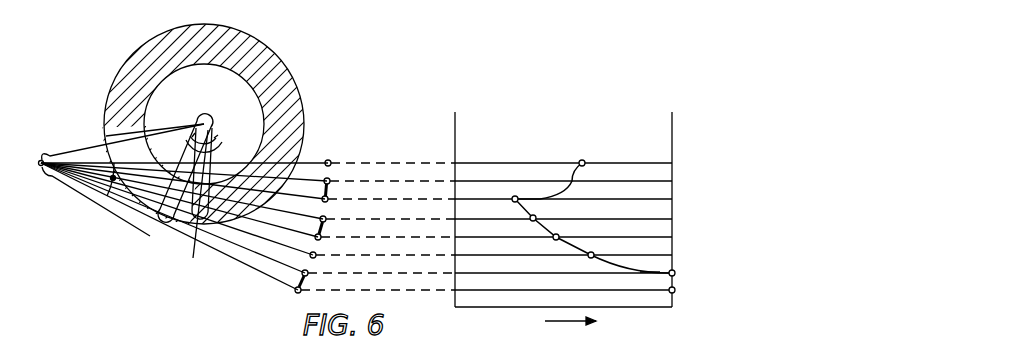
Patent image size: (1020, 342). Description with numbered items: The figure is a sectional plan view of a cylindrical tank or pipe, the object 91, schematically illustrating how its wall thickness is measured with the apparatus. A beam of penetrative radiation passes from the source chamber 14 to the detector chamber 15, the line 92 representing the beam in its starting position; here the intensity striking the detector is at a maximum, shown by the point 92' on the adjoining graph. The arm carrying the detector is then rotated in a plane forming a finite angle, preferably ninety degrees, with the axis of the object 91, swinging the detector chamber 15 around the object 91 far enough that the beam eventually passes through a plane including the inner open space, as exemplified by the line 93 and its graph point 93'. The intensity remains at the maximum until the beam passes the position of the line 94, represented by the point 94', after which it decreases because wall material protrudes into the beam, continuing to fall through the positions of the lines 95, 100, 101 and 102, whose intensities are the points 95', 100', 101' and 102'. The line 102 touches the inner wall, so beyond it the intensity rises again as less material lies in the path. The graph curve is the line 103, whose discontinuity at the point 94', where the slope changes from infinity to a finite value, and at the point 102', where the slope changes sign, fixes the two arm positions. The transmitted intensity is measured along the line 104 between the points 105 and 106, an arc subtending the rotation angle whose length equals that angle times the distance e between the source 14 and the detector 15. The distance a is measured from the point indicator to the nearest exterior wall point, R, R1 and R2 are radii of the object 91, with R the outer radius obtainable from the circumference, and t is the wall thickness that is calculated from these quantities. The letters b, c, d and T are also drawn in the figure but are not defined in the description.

The source chamber 14 is at (36, 166).
The detector chamber 15 is at (340, 152).
The object 91 is at (300, 112).
The line representing the beam of penetrative radiation 92 is at (248, 228).
The line representing the beam of penetrative radiation 93 is at (248, 154).
The line 94 is at (248, 216).
The line 95 is at (248, 207).
The line 100 is at (248, 199).
The line 101 is at (248, 190).
The line 102 is at (248, 182).
The line 103 is at (652, 268).
The line 104 is at (325, 226).
The point 105 is at (307, 275).
The point 106 is at (328, 196).
The point 93' is at (601, 152).
The point 102' is at (495, 190).
The point 101' is at (557, 211).
The point 100' is at (579, 229).
The point 95' is at (610, 246).
The point 94' is at (691, 264).
The point 92' is at (691, 282).
The distance a is at (78, 150).
The slot axis b is at (203, 124).
The slot edge c is at (158, 207).
The ray line d is at (108, 204).
The distance e is at (178, 224).
The thickness t is at (197, 204).
The outer radius R is at (150, 130).
The radius R1 is at (170, 153).
The radius R2 is at (220, 136).
The time axis T is at (558, 318).